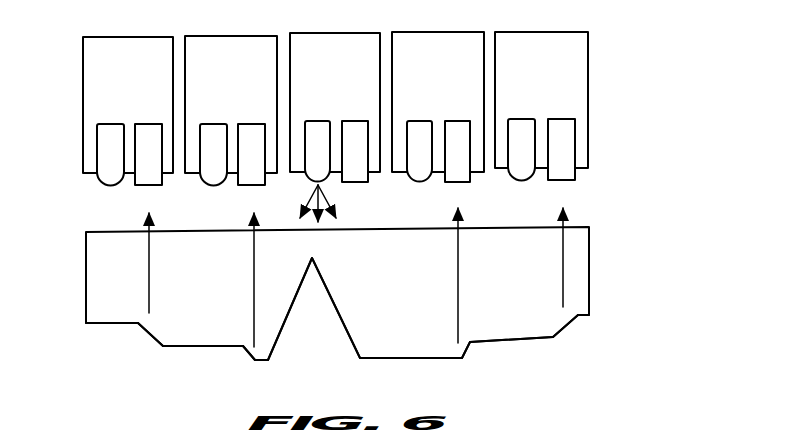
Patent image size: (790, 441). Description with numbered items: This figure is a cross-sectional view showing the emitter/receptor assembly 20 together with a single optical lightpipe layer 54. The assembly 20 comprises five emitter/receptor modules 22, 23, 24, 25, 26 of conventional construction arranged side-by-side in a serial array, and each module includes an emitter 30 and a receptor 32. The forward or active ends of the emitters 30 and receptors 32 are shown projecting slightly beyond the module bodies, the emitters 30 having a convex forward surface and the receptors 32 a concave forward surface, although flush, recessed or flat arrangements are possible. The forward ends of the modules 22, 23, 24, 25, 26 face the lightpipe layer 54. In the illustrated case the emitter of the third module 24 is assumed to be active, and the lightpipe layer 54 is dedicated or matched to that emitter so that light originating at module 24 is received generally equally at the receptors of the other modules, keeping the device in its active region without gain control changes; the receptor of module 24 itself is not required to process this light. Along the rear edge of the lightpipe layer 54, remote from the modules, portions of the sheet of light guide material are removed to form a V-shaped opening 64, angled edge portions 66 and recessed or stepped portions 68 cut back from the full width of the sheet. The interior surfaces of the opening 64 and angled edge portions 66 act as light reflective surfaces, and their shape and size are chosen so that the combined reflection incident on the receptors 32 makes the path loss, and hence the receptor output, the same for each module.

The emitter/receptor assembly 20 is at (596, 28).
The emitter/receptor module 22 is at (130, 37).
The emitter/receptor module 23 is at (232, 36).
The third module 24 is at (334, 33).
The emitter/receptor module 25 is at (437, 32).
The emitter/receptor module 26 is at (541, 32).
The emitter 30 is at (114, 123).
The receptor 32 is at (146, 123).
The optical lightpipe layer 54 is at (84, 262).
The V-shaped opening 64 is at (312, 300).
The angled edge portion 66 is at (150, 338).
The stepped portion 68 is at (105, 326).